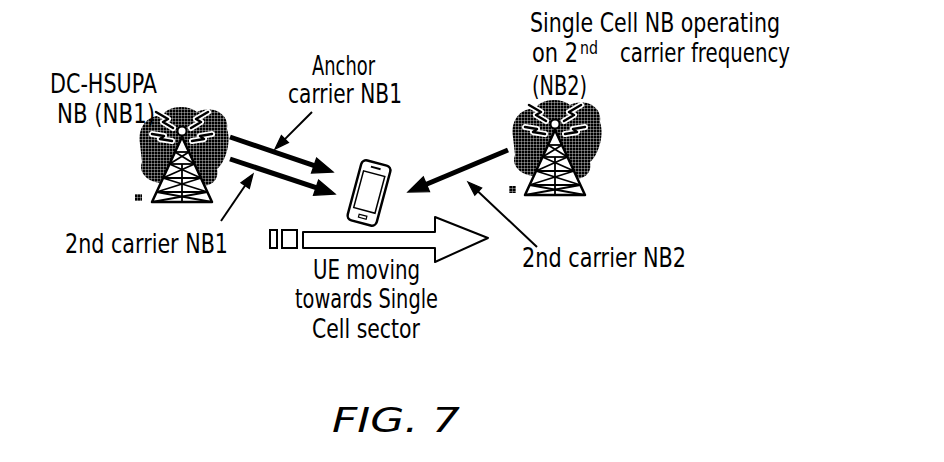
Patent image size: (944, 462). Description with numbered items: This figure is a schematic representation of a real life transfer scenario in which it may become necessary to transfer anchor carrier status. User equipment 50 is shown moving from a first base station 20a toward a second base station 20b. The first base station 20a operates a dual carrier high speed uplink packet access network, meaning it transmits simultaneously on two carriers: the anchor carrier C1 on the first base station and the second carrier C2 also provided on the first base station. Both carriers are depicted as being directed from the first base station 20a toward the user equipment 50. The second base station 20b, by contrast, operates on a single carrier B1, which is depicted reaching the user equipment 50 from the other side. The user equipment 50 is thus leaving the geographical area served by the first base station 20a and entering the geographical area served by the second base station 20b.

The first base station 20a is at (148, 195).
The second base station 20b is at (585, 192).
The user equipment 50 is at (388, 162).
The anchor carrier C1 is at (231, 134).
The second carrier C2 is at (268, 181).
The single carrier B1 is at (483, 162).